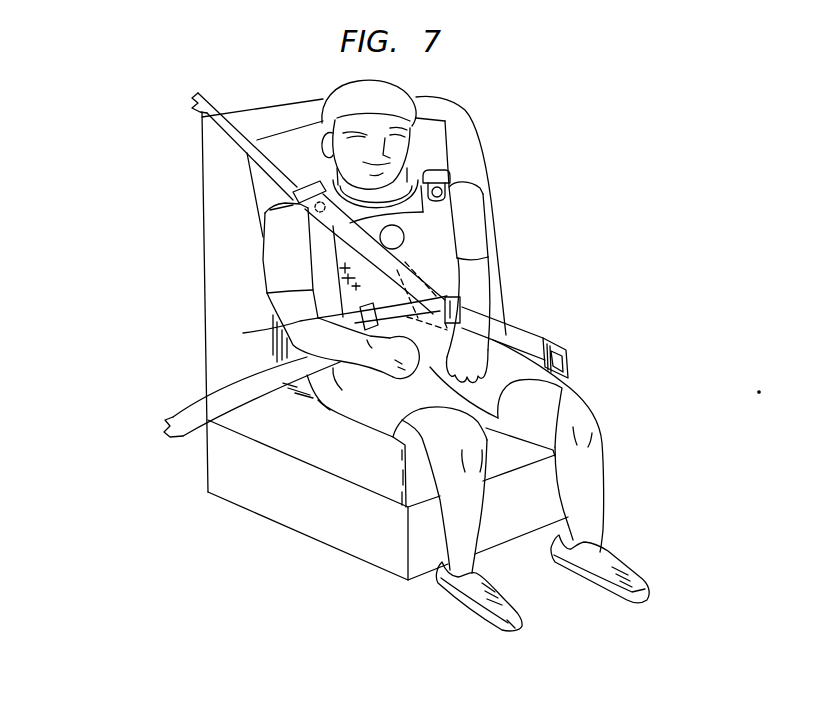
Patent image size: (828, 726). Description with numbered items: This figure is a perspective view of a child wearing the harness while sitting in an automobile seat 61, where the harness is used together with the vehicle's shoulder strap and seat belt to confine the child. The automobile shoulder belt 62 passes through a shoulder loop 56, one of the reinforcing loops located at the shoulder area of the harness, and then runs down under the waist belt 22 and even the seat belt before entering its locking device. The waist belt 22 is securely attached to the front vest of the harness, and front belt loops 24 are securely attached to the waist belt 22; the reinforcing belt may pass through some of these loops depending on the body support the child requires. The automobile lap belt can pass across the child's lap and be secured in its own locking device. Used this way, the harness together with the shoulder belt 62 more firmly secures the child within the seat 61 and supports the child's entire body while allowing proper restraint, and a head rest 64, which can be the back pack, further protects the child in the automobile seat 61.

The waist belt 22 is at (437, 302).
The front belt loops 24 is at (243, 333).
The reinforcing loops 56 is at (297, 193).
The automobile seat 61 is at (463, 119).
The automobile shoulder belt 62 is at (200, 117).
The head rest 64 is at (414, 156).